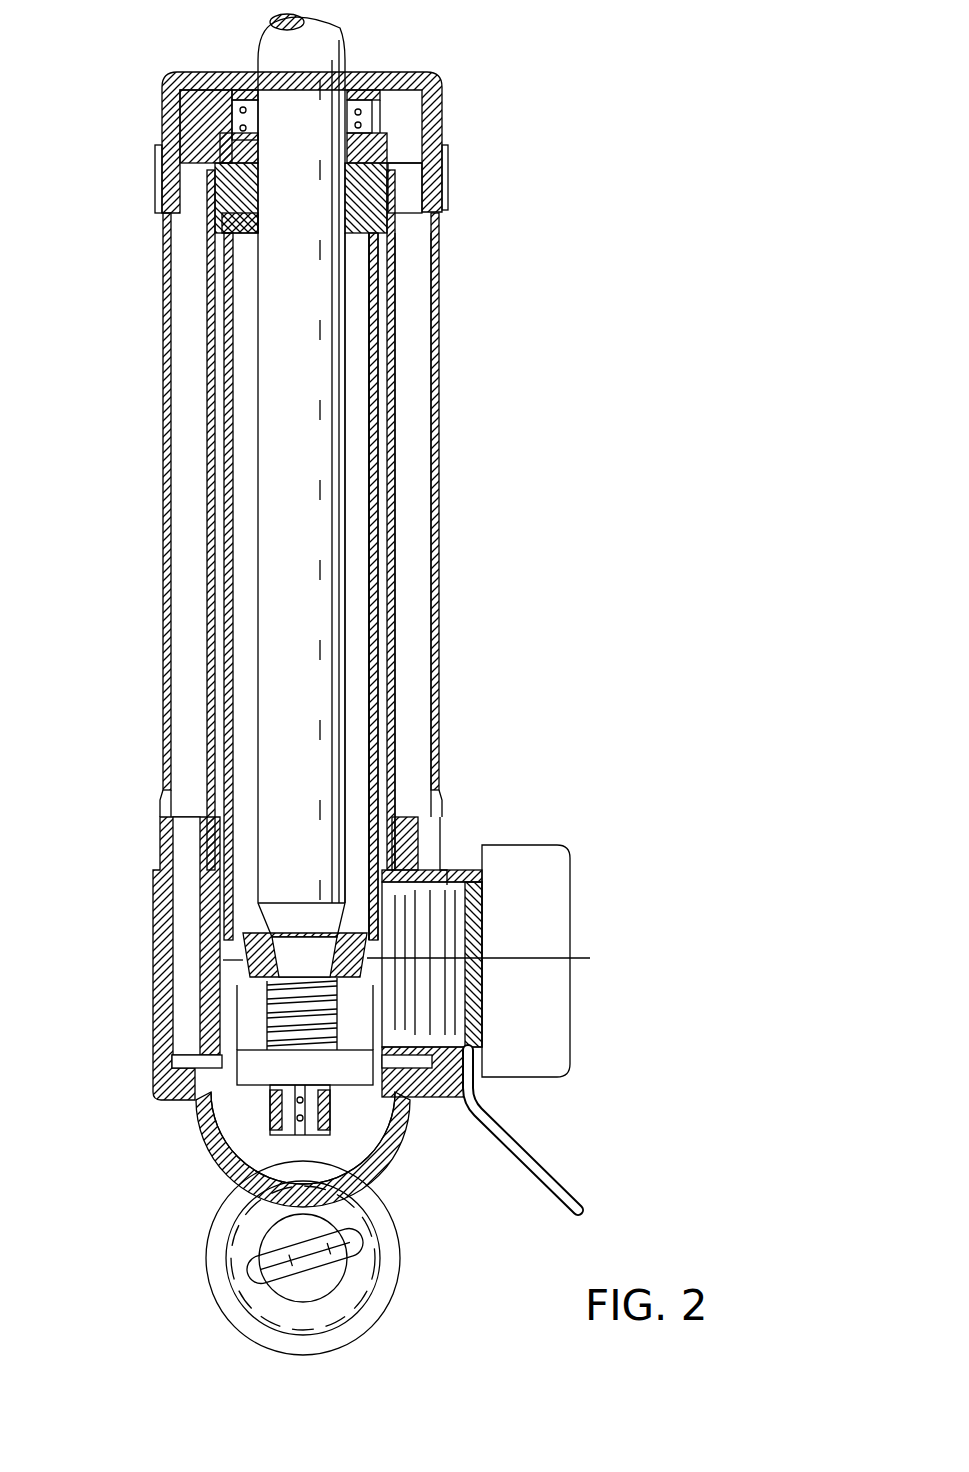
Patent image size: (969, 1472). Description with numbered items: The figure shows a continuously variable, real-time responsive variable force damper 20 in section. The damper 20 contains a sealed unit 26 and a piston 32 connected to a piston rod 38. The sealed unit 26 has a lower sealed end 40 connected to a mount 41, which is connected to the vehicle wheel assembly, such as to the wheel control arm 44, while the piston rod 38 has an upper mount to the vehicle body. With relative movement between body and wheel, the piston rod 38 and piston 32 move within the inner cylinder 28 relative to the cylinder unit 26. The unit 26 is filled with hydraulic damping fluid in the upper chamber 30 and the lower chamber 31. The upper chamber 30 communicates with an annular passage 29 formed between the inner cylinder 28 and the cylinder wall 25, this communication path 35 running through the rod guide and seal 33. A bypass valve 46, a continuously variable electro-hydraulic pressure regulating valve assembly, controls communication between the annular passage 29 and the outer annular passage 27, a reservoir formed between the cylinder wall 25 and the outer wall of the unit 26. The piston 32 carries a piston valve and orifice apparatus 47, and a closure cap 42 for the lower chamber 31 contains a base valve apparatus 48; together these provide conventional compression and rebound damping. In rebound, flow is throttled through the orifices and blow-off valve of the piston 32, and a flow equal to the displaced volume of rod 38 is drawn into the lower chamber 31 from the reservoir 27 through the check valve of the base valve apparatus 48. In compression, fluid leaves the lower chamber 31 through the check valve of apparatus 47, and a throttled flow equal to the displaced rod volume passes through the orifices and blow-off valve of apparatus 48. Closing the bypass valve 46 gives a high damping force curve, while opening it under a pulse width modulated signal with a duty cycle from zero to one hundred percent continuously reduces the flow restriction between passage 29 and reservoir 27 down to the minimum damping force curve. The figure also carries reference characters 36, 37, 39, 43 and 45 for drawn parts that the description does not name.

The damper 20 is at (492, 272).
The cylinder wall 25 is at (395, 435).
The sealed unit 26 is at (440, 360).
The outer annular passage 27 is at (415, 573).
The inner cylinder 28 is at (230, 577).
The annular passage 29 is at (215, 483).
The upper chamber 30 is at (360, 748).
The lower chamber 31 is at (250, 1037).
The piston 32 is at (240, 965).
The rod guide and seal 33 is at (230, 212).
The communication path 35 is at (373, 222).
The cap insert 36 is at (205, 105).
The end cap 37 is at (400, 80).
The piston rod 38 is at (270, 402).
The cavity 39 is at (405, 115).
The lower sealed end 40 is at (250, 1108).
The mount 41 is at (390, 1262).
The closure cap 42 is at (360, 1133).
The retaining ring 43 is at (328, 1143).
The wheel control arm 44 is at (325, 1278).
The housing 45 is at (405, 850).
The bypass valve 46 is at (537, 958).
The piston valve and orifice apparatus 47 is at (300, 995).
The base valve apparatus 48 is at (257, 1162).